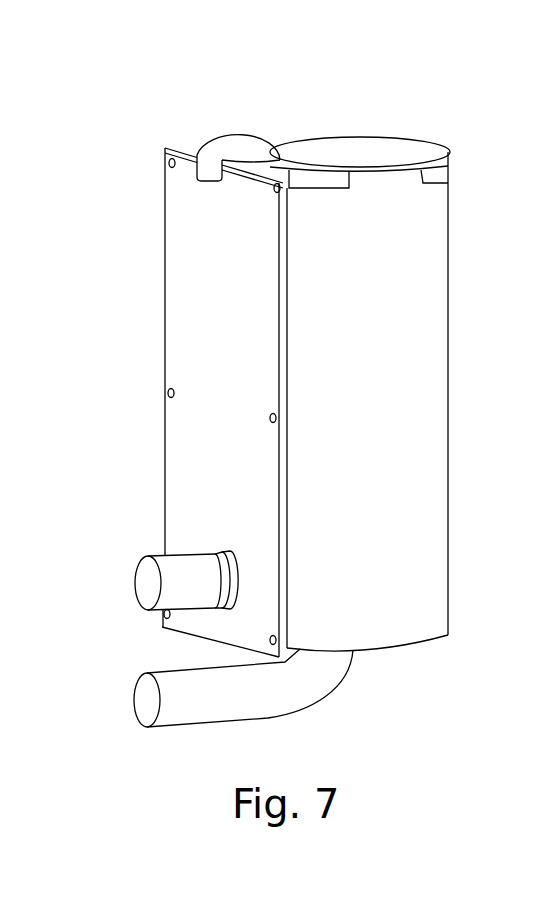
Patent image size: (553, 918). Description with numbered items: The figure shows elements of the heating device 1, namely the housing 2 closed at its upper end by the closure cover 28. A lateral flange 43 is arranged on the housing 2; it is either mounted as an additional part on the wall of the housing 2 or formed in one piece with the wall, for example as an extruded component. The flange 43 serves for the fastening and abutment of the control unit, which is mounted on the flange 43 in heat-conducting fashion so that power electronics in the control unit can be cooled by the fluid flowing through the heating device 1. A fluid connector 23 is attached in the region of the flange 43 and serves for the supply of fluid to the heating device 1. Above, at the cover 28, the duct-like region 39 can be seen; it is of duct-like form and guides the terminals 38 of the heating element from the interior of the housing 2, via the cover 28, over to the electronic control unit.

The heating device 1 is at (486, 193).
The housing 2 is at (397, 388).
The closure cover 28 is at (362, 145).
The lateral flange 43 is at (197, 337).
The duct-like region 39 is at (234, 133).
The terminals 38 is at (207, 181).
The fluid connector 23 is at (167, 597).